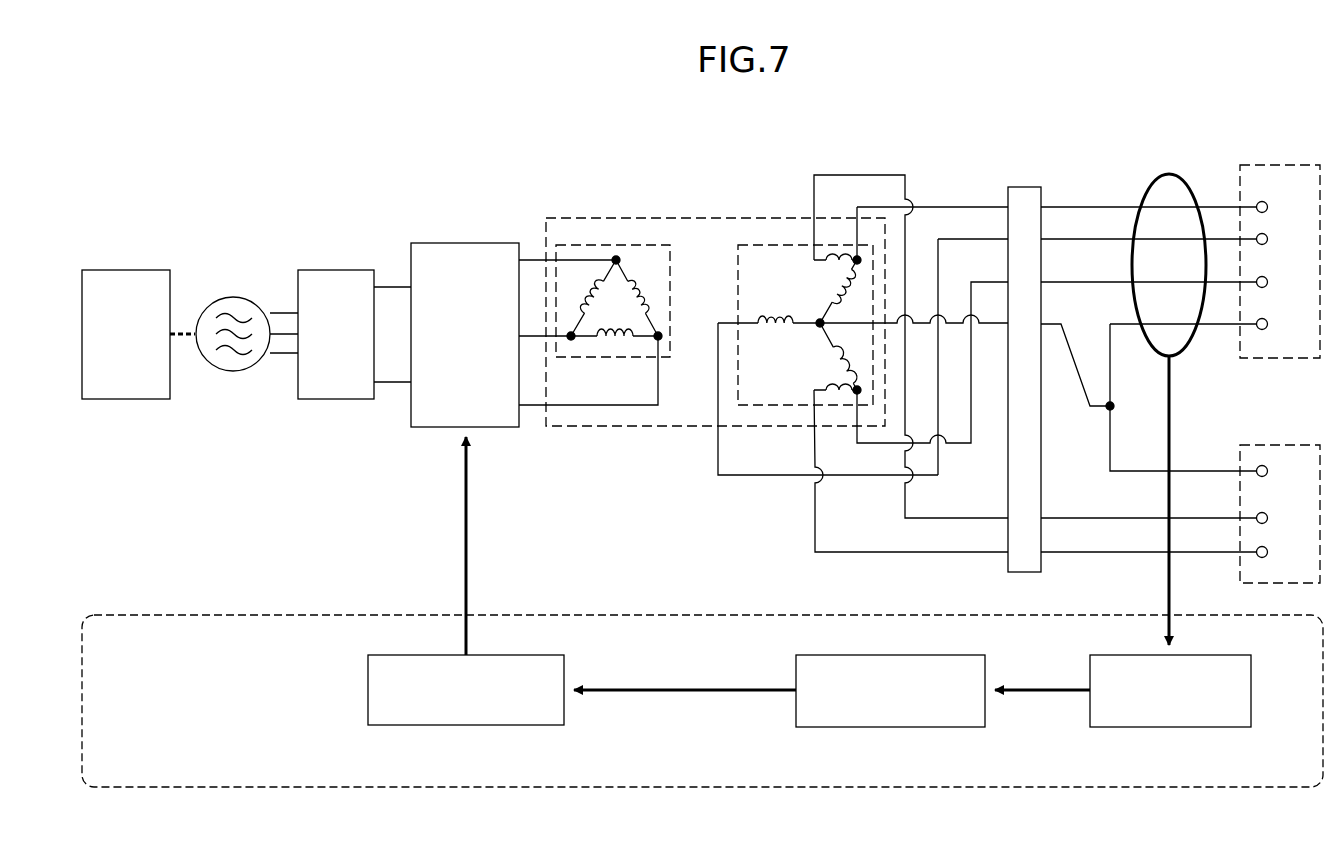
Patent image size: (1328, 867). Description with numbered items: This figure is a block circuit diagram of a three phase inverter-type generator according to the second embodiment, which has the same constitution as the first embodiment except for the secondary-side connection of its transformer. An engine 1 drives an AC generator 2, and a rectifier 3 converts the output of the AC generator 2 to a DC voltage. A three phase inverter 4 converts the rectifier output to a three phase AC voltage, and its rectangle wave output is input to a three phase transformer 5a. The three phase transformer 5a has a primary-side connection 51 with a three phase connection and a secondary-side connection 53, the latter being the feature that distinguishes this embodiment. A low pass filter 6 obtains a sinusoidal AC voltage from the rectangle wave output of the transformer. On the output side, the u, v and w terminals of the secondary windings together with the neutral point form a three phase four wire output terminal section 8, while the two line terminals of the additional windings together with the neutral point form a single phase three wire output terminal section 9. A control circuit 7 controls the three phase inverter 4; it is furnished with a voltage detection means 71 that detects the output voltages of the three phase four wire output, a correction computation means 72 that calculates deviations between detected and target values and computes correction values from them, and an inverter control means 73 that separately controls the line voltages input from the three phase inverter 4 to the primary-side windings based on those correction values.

The engine 1 is at (125, 270).
The AC generator 2 is at (225, 297).
The rectifier 3 is at (333, 270).
The three phase inverter 4 is at (465, 243).
The three phase transformer 5a is at (702, 218).
The primary-side connection 51 is at (572, 245).
The secondary-side connection 53 is at (773, 245).
The low pass filter 6 is at (1023, 187).
The control circuit 7 is at (230, 615).
The three phase four wire output terminal section 8 is at (1253, 165).
The single phase three wire output terminal section 9 is at (1256, 445).
The voltage detection means 71 is at (1172, 728).
The correction computation means 72 is at (893, 728).
The inverter control means 73 is at (465, 728).